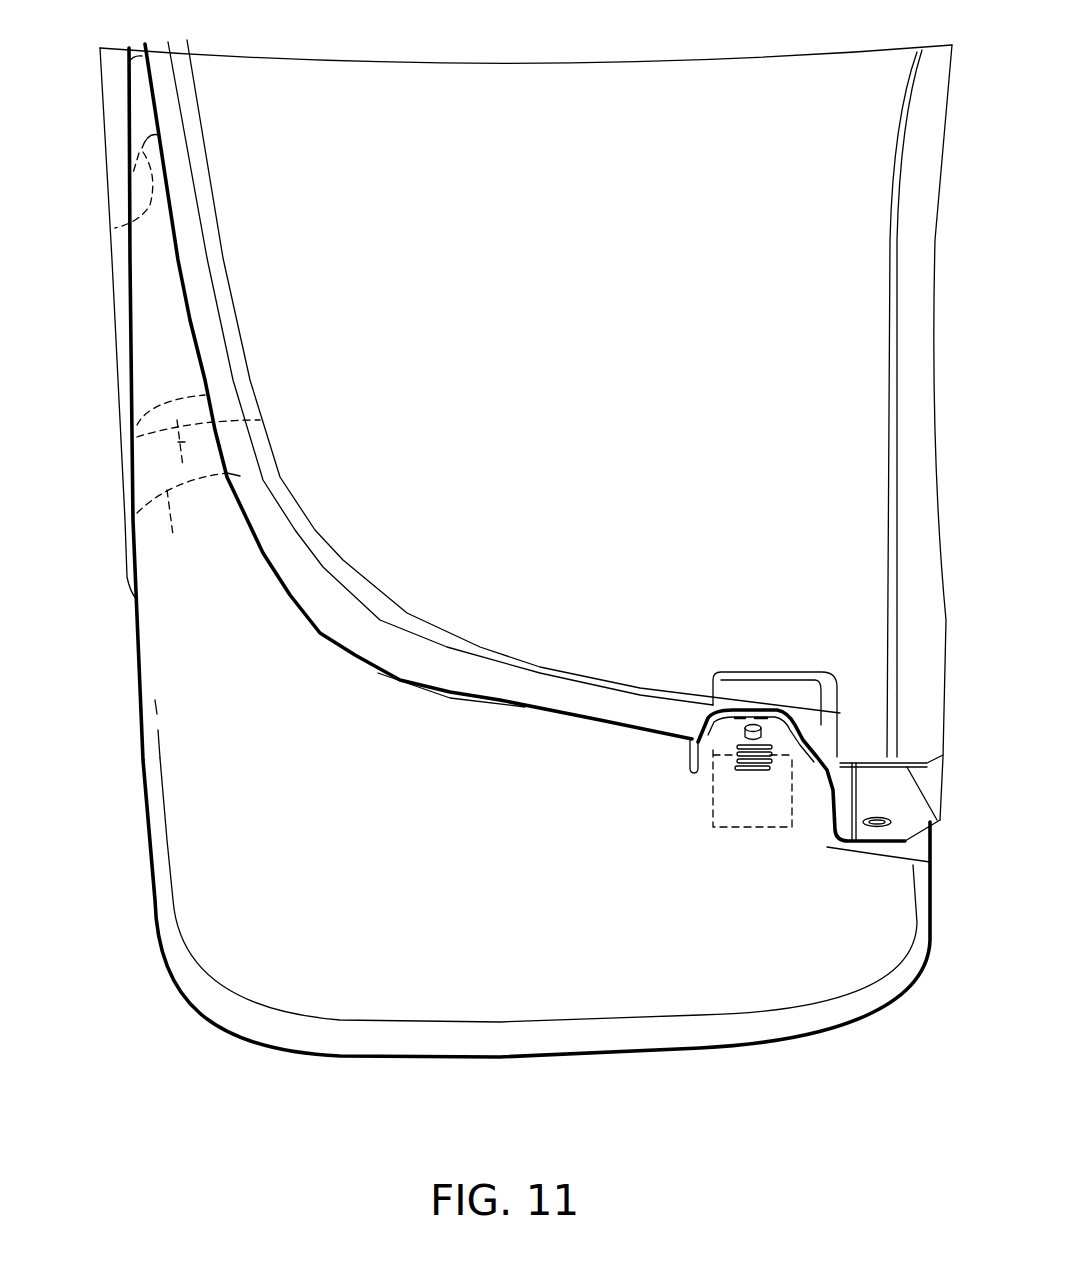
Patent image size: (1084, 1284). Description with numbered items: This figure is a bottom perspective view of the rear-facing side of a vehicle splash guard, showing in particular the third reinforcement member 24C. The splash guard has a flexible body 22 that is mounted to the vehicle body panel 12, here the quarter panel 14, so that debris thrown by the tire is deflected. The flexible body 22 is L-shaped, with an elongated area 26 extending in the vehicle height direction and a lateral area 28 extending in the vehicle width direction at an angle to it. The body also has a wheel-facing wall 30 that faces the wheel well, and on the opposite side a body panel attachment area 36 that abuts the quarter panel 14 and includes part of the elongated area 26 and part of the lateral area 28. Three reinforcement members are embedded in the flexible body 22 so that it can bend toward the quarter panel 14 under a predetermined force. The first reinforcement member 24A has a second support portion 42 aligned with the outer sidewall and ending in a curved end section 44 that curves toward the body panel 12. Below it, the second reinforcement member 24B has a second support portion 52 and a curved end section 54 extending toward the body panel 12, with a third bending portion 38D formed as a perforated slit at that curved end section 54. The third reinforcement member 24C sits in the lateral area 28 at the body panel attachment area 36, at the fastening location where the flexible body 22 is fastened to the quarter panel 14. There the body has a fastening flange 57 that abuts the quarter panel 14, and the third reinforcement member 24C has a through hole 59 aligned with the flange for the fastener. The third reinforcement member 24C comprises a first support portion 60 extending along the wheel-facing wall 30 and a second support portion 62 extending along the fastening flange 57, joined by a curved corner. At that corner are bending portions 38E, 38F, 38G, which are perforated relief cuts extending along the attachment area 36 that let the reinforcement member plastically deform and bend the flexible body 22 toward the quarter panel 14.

The vehicle body panel 12 is at (569, 514).
The quarter panel 14 is at (387, 622).
The flexible body 22 is at (165, 971).
The first reinforcement member 24A is at (110, 109).
The second reinforcement member 24B is at (120, 481).
The third reinforcement member 24C is at (713, 805).
The elongated area 26 is at (143, 760).
The lateral area 28 is at (513, 715).
The wheel-facing wall 30 is at (222, 860).
The body panel attachment area 36 is at (672, 724).
The third bending portion 38D is at (262, 420).
The bending portion 38E is at (762, 772).
The bending portion 38F is at (735, 752).
The bending portion 38G is at (766, 746).
The second support portion 42 is at (115, 228).
The curved end section 44 is at (128, 62).
The second support portion 52 is at (188, 521).
The curved end section 54 is at (123, 384).
The fastening flange 57 is at (732, 722).
The through hole 59 is at (750, 723).
The first support portion 60 is at (733, 830).
The second support portion 62 is at (708, 722).